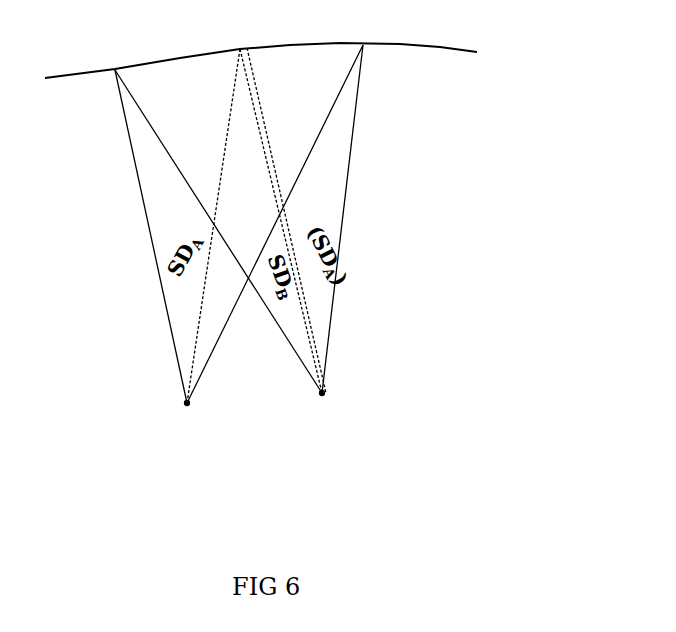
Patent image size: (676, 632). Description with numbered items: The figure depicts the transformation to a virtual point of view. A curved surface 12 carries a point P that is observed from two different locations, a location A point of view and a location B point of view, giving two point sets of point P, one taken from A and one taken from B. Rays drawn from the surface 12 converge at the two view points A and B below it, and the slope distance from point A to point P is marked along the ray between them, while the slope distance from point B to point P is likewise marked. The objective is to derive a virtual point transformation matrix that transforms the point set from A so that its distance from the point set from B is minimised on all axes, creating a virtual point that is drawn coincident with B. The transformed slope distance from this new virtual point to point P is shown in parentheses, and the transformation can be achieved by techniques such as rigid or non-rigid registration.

The surface 12 is at (452, 43).
The point P is at (256, 205).
The location A point of view A is at (239, 245).
The location B point of view B is at (245, 245).